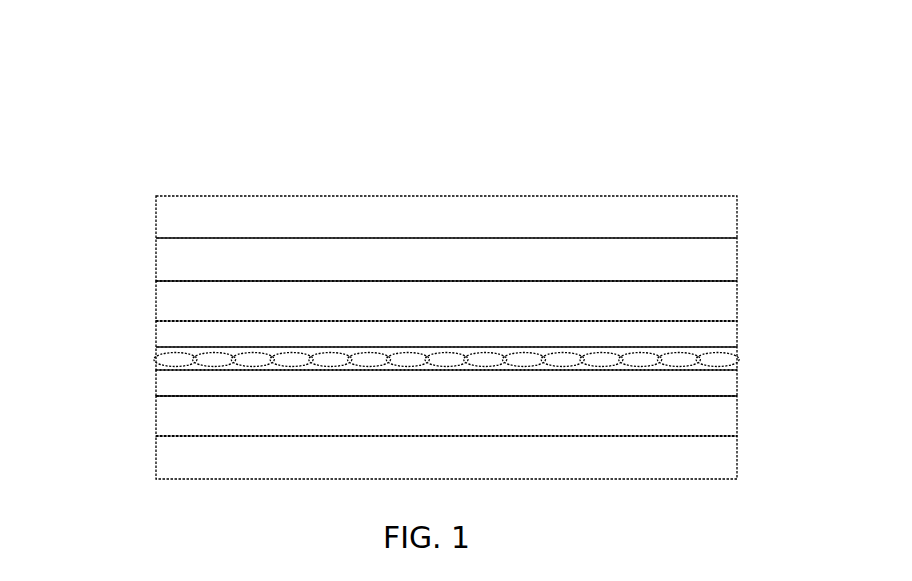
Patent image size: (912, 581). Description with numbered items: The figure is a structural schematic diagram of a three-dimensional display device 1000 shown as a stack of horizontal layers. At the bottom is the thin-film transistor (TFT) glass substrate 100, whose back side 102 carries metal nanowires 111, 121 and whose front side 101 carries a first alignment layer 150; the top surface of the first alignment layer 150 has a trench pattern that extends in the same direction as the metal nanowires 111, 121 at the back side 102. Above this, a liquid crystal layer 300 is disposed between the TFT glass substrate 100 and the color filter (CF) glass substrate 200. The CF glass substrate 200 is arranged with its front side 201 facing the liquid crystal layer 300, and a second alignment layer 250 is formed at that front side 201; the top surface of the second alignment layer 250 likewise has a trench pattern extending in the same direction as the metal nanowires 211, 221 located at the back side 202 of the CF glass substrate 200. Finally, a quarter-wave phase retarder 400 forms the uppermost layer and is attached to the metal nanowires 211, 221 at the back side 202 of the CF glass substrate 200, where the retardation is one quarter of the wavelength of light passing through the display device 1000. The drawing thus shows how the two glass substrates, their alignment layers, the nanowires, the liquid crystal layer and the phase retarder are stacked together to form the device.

The 3D display device 1000 is at (447, 125).
The λ/4 phase retarder 400 is at (163, 217).
The metal nanowires 211 is at (384, 259).
The metal nanowires 221 is at (168, 262).
The color filter (CF) glass substrate 200 is at (170, 298).
The back side of the CF glass substrate 202 is at (685, 281).
The second alignment layer 250 is at (166, 332).
The front side of the CF glass substrate 201 is at (687, 321).
The liquid crystal layer 300 is at (162, 355).
The first alignment layer 150 is at (165, 385).
The front side of the TFT glass substrate 101 is at (688, 396).
The thin-film transistor (TFT) glass substrate 100 is at (167, 412).
The back side of the TFT glass substrate 102 is at (695, 436).
The metal nanowires 111 is at (394, 457).
The metal nanowires 121 is at (173, 456).